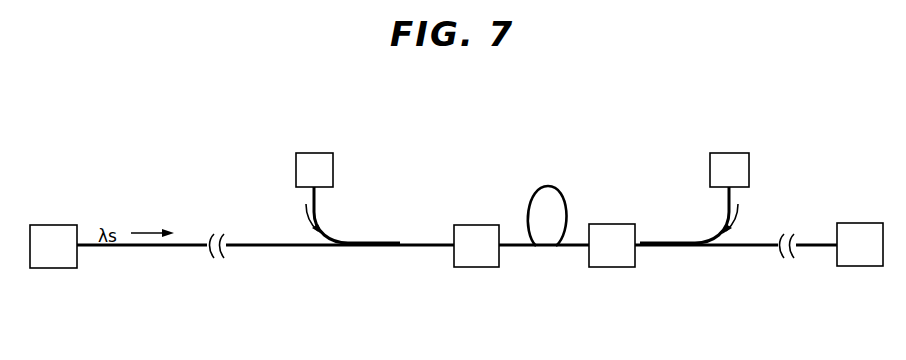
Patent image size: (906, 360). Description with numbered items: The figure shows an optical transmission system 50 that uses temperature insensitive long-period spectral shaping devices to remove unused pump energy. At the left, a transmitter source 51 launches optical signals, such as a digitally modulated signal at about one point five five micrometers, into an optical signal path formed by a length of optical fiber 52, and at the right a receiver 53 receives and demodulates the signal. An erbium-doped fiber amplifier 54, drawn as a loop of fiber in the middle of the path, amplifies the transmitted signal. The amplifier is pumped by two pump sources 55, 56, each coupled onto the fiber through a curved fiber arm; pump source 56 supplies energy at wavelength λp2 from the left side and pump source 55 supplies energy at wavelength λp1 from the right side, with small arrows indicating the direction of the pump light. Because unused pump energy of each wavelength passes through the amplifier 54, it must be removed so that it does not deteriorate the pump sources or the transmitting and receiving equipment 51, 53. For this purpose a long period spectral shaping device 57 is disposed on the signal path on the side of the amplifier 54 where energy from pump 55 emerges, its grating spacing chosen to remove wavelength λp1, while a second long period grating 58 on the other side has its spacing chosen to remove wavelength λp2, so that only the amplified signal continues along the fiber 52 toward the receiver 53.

The optical transmission system 50 is at (702, 78).
The transmitter source 51 is at (52, 224).
The optical fiber 52 is at (118, 248).
The receiver 53 is at (857, 222).
The erbium-doped fiber amplifier 54 is at (548, 190).
The pump source 55 is at (732, 152).
The pump source 56 is at (320, 152).
The long period spectral shaping device 57 is at (473, 267).
The second long period grating 58 is at (609, 267).